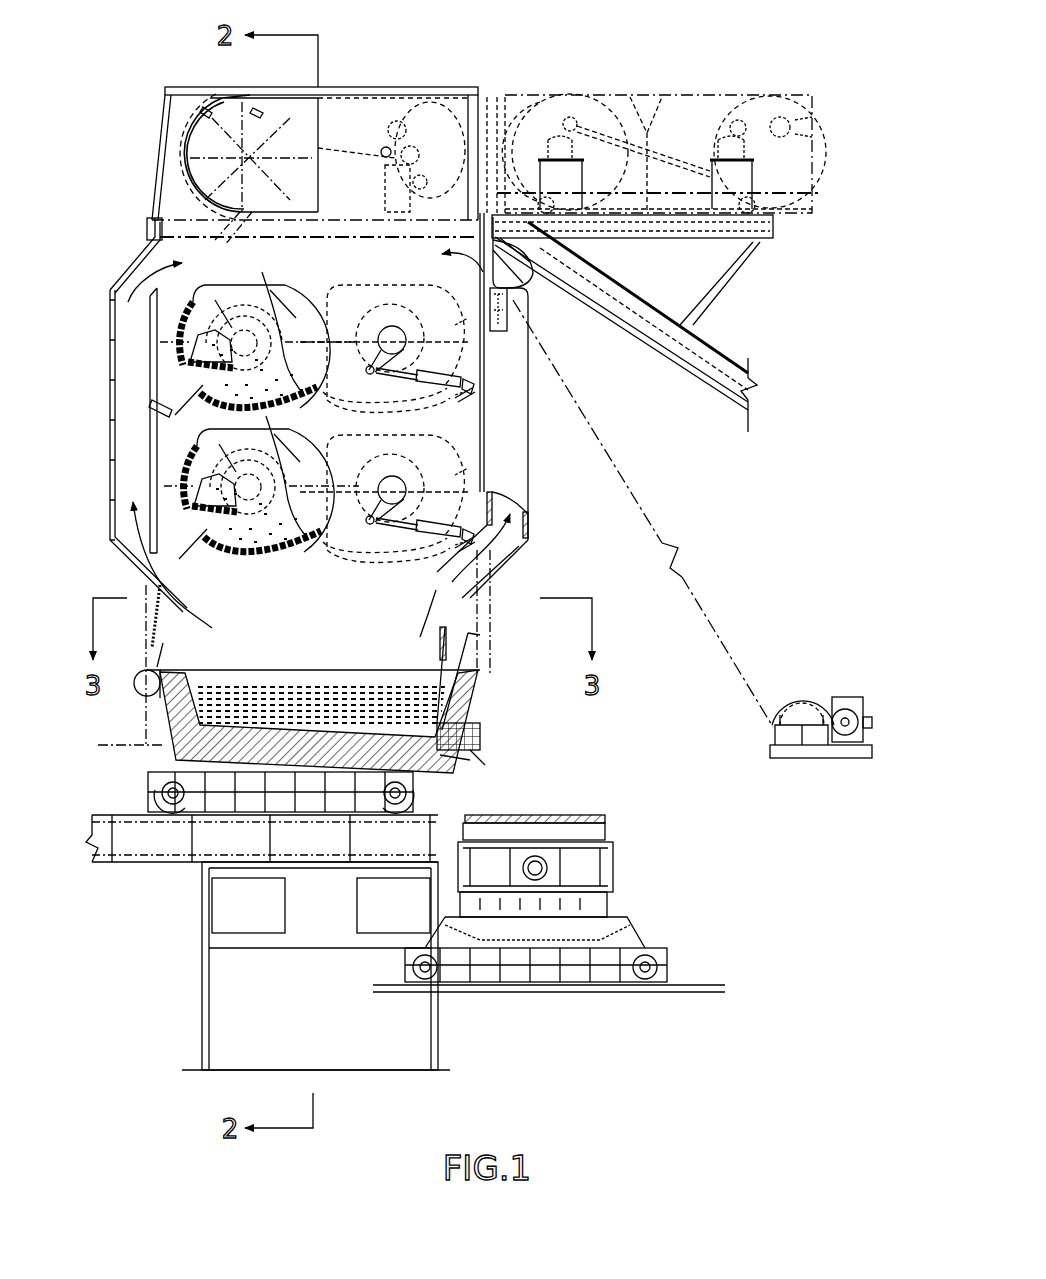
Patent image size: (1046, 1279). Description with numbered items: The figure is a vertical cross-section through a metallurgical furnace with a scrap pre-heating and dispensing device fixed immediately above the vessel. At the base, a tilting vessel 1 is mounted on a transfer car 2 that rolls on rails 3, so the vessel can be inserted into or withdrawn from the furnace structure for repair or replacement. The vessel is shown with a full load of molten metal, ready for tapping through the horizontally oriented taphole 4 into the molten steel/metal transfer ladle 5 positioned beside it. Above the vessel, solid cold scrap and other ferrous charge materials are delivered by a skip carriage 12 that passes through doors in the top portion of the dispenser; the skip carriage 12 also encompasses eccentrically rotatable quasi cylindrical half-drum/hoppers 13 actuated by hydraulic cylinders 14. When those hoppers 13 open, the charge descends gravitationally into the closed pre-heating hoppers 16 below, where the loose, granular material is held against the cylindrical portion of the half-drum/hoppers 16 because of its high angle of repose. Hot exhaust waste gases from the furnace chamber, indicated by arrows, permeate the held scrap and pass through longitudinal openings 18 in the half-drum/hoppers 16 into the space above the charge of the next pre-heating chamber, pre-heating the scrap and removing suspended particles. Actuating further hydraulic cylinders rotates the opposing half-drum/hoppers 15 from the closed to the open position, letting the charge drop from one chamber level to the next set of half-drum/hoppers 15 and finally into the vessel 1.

The tilting vessel 1 is at (490, 688).
The transfer car 2 is at (413, 792).
The rails 3 is at (130, 813).
The taphole 4 is at (490, 737).
The molten steel/metal transfer ladle 5 is at (605, 820).
The skip carriage 12 is at (425, 110).
The eccentrically rotatable quasi cylindrical half-drum/hoppers 13 is at (225, 205).
The hydraulic cylinders 14 is at (780, 127).
The eccentrically rotatable quasi cylindrical half-drum/hoppers 15 is at (368, 285).
The eccentrically rotatable quasi cylindrical half-drum/hoppers 16 is at (277, 285).
The longitudinal openings 18 is at (235, 372).